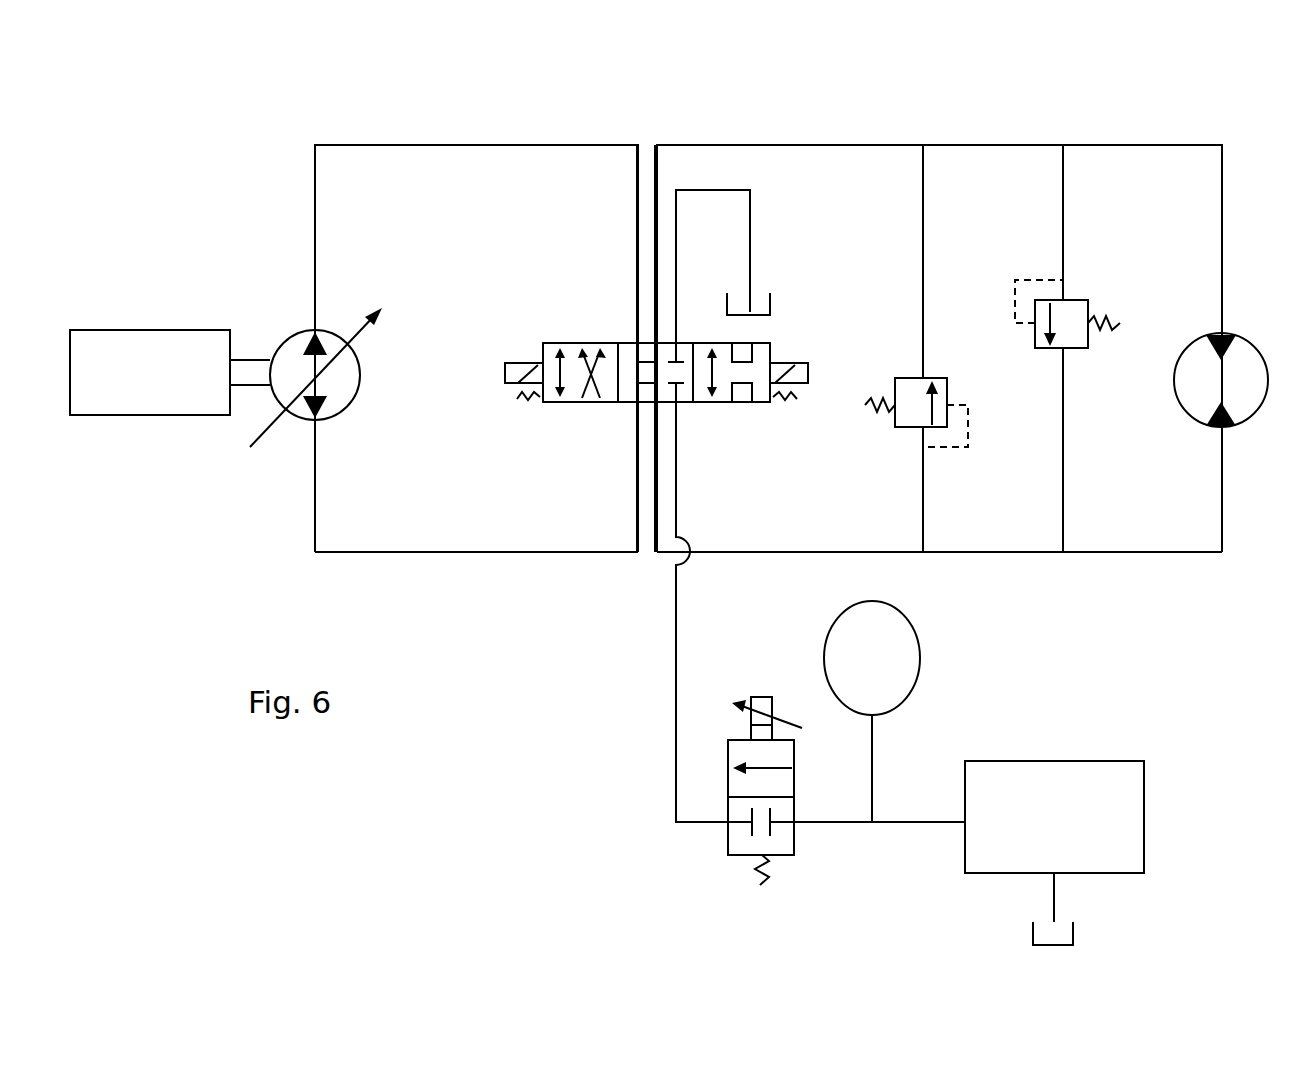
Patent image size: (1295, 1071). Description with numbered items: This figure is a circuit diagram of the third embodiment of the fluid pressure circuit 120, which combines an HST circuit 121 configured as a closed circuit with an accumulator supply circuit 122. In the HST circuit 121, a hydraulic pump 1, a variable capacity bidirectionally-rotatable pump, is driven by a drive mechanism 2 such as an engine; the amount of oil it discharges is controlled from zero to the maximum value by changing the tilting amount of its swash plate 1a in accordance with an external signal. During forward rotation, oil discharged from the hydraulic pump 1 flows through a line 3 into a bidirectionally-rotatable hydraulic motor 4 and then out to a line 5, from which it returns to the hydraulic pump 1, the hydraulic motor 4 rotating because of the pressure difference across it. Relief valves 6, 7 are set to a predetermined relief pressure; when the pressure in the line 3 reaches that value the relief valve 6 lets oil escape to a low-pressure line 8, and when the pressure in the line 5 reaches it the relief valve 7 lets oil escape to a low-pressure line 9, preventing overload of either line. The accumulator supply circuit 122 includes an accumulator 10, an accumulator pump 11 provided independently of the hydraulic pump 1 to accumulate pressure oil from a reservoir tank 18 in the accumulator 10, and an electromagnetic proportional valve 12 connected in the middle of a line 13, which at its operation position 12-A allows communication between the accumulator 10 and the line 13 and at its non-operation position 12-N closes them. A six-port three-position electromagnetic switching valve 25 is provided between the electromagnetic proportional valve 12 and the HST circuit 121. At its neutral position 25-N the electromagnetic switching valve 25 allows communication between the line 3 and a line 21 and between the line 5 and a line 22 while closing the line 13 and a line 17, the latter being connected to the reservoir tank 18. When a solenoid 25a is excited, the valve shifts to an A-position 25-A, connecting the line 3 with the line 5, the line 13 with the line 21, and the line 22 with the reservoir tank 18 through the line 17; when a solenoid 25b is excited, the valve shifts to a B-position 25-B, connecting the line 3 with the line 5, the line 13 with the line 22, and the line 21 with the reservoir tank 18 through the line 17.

The hydraulic pump 1 is at (295, 416).
The swash plate 1a is at (253, 432).
The drive mechanism 2 is at (157, 330).
The line 3 is at (430, 146).
The hydraulic motor 4 is at (1236, 418).
The line 5 is at (470, 553).
The relief valve 6 is at (1072, 300).
The relief valve 7 is at (932, 380).
The low-pressure line 8 is at (1063, 487).
The low-pressure line 9 is at (923, 192).
The accumulator 10 is at (920, 658).
The accumulator pump 11 is at (1069, 761).
The electromagnetic proportional valve 12 is at (758, 697).
The operation position 12-A is at (794, 783).
The non-operation position 12-N is at (794, 840).
The line 13 is at (675, 754).
The line 17 is at (750, 243).
The reservoir tank 18 is at (770, 300).
The line 21 is at (828, 147).
The line 22 is at (743, 553).
The six-port three-position electromagnetic switching valve 25 is at (589, 345).
The solenoid 25a is at (523, 363).
The solenoid 25b is at (808, 370).
The A-position 25-A is at (572, 403).
The B-position 25-B is at (748, 403).
The neutral position 25-N is at (662, 403).
The fluid pressure circuit 120 is at (1132, 110).
The HST circuit 121 is at (758, 110).
The accumulator supply circuit 122 is at (1122, 618).